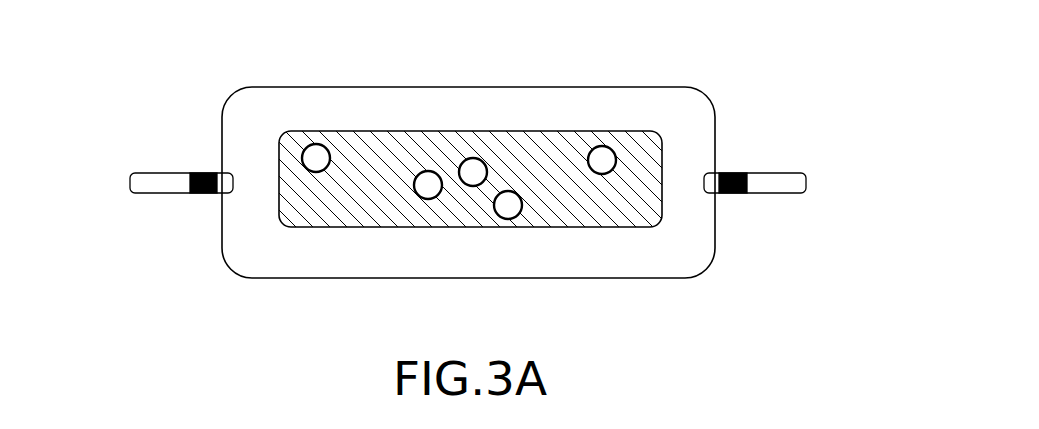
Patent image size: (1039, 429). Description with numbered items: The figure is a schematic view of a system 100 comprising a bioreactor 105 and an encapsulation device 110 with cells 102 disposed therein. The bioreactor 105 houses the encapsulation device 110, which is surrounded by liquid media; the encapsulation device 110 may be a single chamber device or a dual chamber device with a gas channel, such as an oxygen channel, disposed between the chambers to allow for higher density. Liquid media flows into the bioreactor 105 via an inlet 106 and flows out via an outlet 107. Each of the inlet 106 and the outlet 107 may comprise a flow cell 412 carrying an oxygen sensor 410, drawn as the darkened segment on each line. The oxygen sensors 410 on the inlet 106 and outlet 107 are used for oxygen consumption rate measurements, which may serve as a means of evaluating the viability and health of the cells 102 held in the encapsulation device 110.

The system 100 is at (479, 185).
The cells 102 is at (508, 203).
The bioreactor 105 is at (356, 87).
The inlet 106 is at (163, 185).
The outlet 107 is at (783, 185).
The encapsulation device 110 is at (628, 152).
The oxygen sensor 410 is at (469, 147).
The flow cell 412 is at (203, 170).